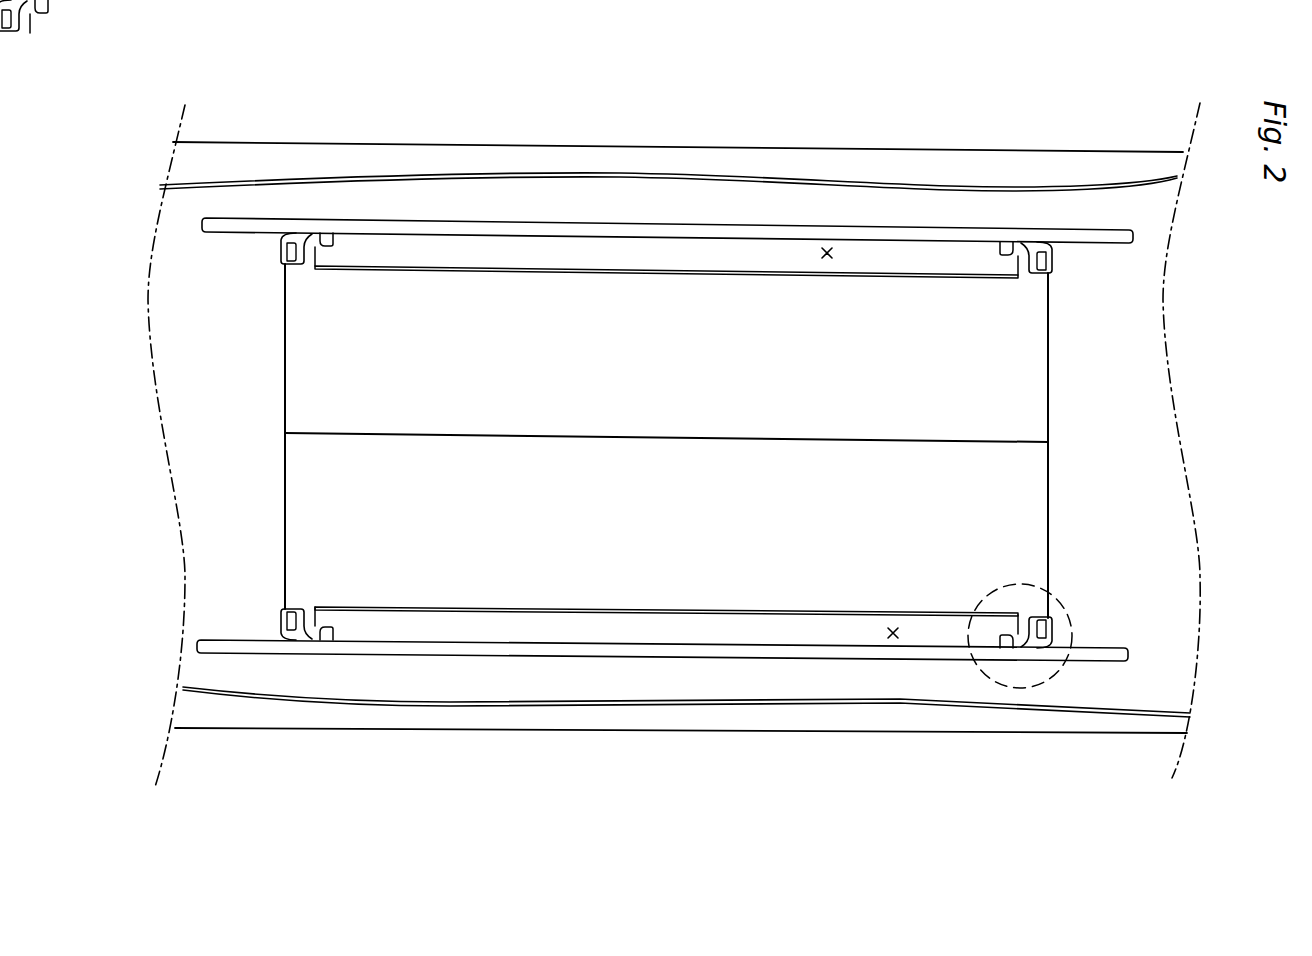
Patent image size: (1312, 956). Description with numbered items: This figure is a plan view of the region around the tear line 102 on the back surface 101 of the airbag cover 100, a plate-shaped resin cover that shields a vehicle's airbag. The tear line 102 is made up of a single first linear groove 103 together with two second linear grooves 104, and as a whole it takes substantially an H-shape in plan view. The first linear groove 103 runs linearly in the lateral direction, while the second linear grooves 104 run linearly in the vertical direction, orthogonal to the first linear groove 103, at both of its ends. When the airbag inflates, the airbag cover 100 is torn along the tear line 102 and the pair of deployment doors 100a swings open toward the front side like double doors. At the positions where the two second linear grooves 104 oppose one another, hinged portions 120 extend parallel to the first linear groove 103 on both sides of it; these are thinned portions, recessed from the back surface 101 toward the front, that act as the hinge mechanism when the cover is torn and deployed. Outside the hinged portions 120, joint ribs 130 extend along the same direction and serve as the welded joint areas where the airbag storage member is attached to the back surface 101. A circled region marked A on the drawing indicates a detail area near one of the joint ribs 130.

The airbag cover 100 is at (965, 150).
The deployment doors 100a is at (428, 315).
The back surface 101 is at (710, 162).
The tear line 102 is at (675, 356).
The first linear groove 103 is at (598, 437).
The second linear grooves 104 is at (283, 377).
The hinged portions 120 is at (830, 250).
The joint ribs 130 is at (1117, 227).
The detail region A is at (997, 682).